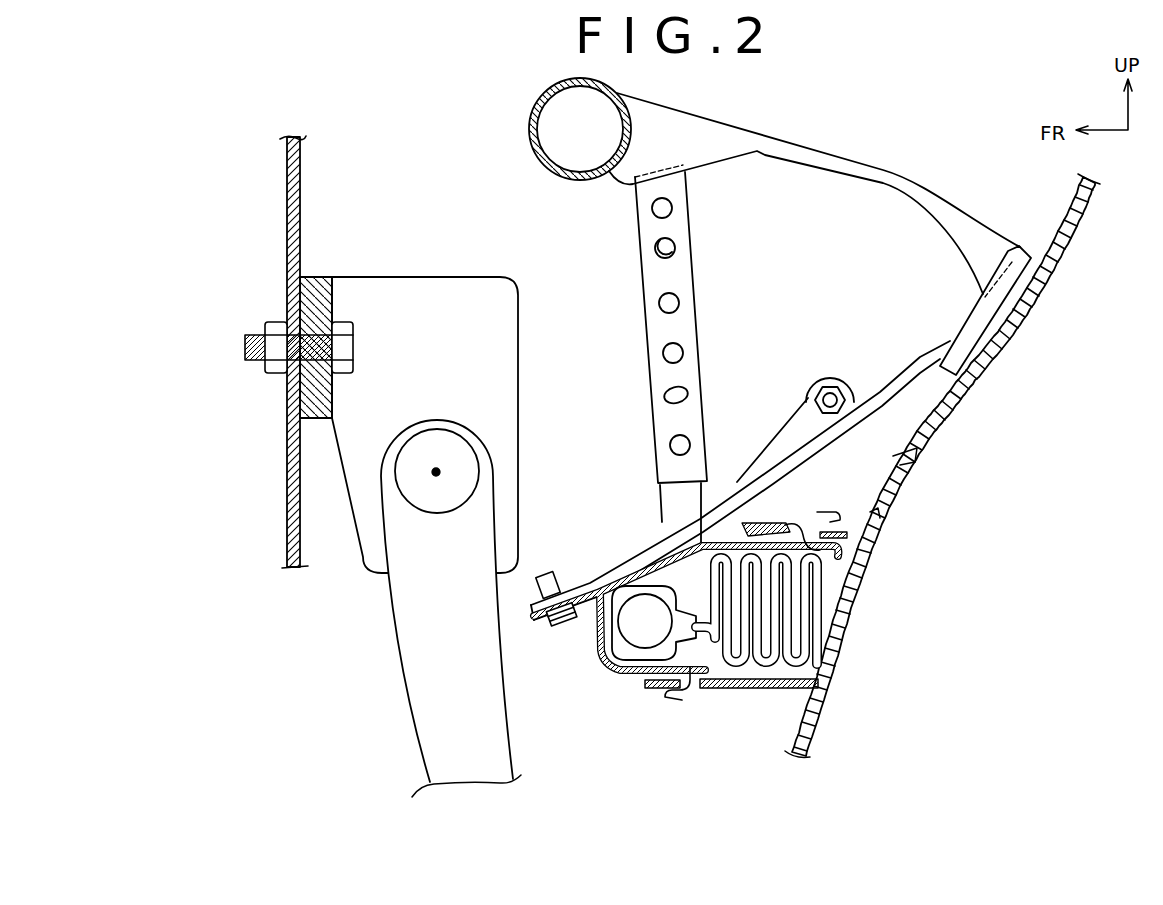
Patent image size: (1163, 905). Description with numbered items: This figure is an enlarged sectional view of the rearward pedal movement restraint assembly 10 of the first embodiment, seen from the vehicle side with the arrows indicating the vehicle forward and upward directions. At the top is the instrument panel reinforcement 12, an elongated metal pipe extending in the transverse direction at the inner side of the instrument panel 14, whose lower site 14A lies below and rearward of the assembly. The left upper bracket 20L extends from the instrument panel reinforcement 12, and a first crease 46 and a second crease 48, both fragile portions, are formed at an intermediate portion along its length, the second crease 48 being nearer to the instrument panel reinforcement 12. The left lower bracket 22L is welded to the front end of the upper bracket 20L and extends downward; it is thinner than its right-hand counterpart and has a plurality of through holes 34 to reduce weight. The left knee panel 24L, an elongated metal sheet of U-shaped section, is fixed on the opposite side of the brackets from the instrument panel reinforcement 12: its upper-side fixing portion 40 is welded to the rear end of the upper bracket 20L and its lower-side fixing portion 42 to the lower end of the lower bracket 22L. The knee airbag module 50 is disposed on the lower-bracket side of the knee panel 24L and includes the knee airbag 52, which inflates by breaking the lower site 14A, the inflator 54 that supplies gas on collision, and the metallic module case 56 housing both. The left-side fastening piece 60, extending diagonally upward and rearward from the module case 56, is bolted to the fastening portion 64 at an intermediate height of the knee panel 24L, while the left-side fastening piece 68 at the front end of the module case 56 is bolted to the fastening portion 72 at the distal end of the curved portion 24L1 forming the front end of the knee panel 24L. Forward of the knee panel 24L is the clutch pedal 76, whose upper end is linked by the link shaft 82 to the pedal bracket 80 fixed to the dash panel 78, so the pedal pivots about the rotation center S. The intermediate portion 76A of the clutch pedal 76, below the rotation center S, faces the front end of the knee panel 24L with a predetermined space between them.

The rearward pedal movement restraint assembly 10 is at (598, 781).
The instrument panel reinforcement 12 is at (538, 98).
The instrument panel 14 is at (938, 427).
The lower site 14A is at (840, 645).
The left upper bracket 20L is at (828, 153).
The left lower bracket 22L is at (642, 322).
The left knee panel 24L is at (900, 373).
The curved portion 24L1 is at (565, 625).
The through holes 34 is at (675, 247).
The upper-side fixing portion 40 is at (1020, 297).
The lower-side fixing portion 42 is at (660, 505).
The first crease 46 is at (883, 183).
The second crease 48 is at (762, 153).
The knee airbag module 50 is at (630, 686).
The knee airbag 52 is at (760, 688).
The inflator 54 is at (635, 672).
The module case 56 is at (693, 695).
The left-side fastening piece 60 is at (768, 437).
The fastening portion 64 is at (830, 376).
The left-side fastening piece 68 is at (538, 622).
The fastening portion 72 is at (543, 573).
The clutch pedal 76 is at (406, 742).
The intermediate portion 76A is at (395, 630).
The dash panel 78 is at (286, 203).
The pedal bracket 80 is at (410, 277).
The link shaft 82 is at (448, 430).
The rotation center S is at (434, 468).